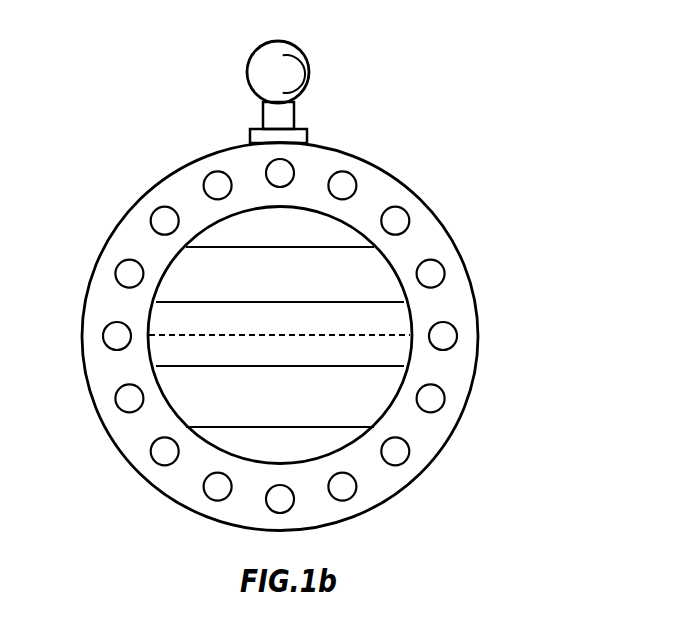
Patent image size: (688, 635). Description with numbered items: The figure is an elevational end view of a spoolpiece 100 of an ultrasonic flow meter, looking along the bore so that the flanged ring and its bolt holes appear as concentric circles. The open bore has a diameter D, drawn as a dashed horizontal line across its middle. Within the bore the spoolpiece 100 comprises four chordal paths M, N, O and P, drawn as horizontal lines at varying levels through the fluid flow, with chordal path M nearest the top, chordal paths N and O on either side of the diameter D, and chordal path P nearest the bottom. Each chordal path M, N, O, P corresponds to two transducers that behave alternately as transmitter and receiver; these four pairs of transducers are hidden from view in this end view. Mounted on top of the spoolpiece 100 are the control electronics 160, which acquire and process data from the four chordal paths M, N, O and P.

The spoolpiece 100 is at (315, 337).
The control electronics 160 is at (312, 77).
The chordal path M is at (280, 232).
The chordal path N is at (280, 289).
The chordal path O is at (280, 354).
The chordal path P is at (280, 413).
The diameter D is at (279, 351).